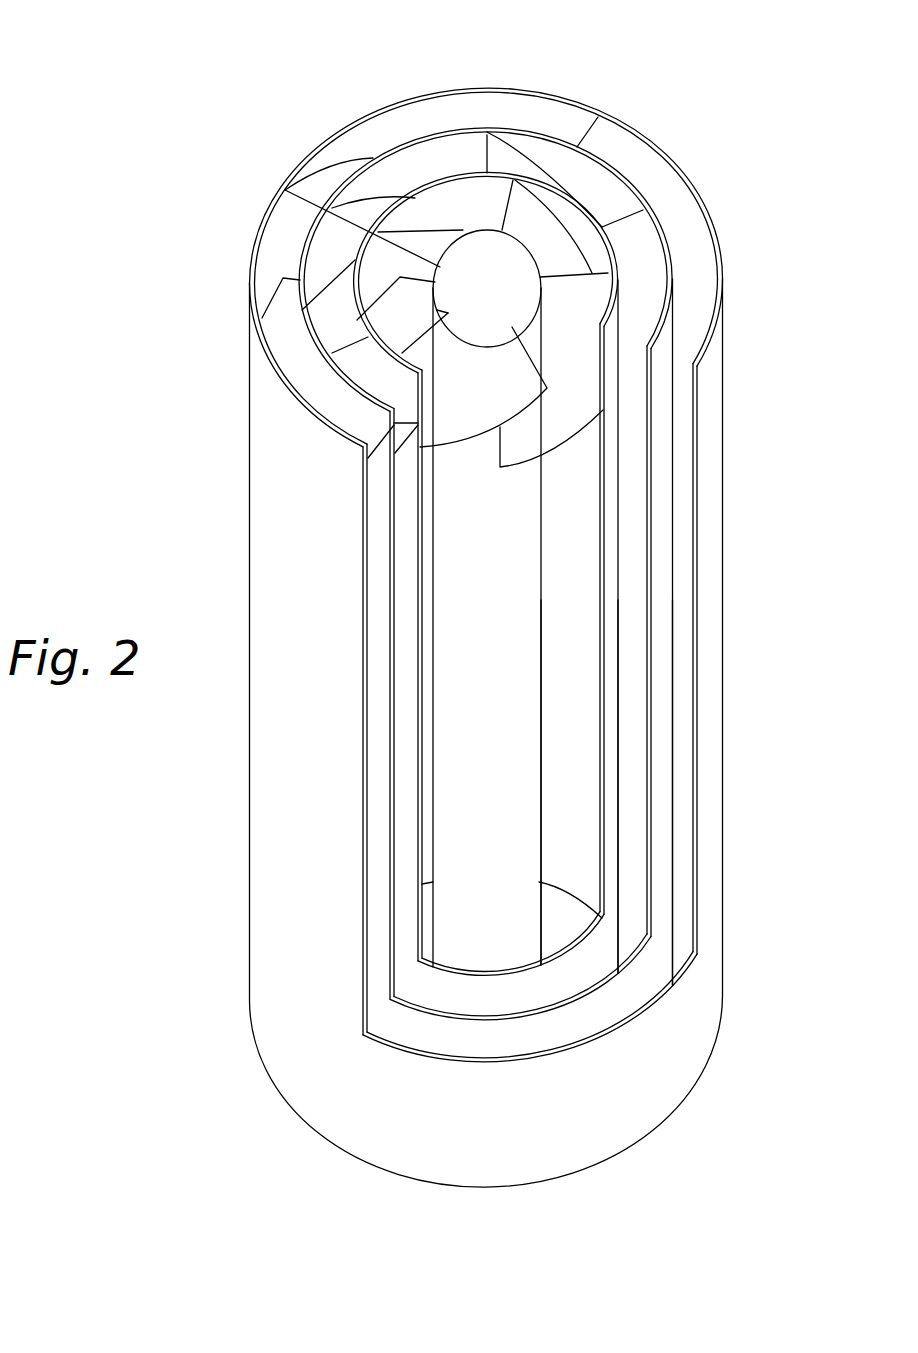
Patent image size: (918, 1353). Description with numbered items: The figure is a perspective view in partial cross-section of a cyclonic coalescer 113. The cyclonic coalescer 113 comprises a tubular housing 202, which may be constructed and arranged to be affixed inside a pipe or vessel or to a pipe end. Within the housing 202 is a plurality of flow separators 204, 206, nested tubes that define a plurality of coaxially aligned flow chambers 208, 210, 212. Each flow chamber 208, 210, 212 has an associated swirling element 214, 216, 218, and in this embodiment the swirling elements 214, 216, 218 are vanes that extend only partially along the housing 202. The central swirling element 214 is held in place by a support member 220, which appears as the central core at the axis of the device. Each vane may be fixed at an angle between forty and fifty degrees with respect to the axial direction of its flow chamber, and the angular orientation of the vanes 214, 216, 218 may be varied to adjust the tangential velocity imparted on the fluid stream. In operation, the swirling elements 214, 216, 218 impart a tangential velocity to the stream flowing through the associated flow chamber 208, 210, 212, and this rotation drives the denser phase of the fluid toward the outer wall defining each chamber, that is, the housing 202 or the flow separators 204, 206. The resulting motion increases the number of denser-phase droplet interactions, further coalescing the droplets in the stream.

The cyclonic coalescer 113 is at (198, 104).
The tubular housing 202 is at (724, 629).
The flow separator 204 is at (674, 556).
The flow separator 206 is at (619, 486).
The flow chamber 208 is at (683, 927).
The flow chamber 210 is at (630, 942).
The flow chamber 212 is at (558, 935).
The central swirling element 214 is at (370, 452).
The swirling element 216 is at (392, 432).
The swirling element 218 is at (463, 440).
The support member 220 is at (497, 250).